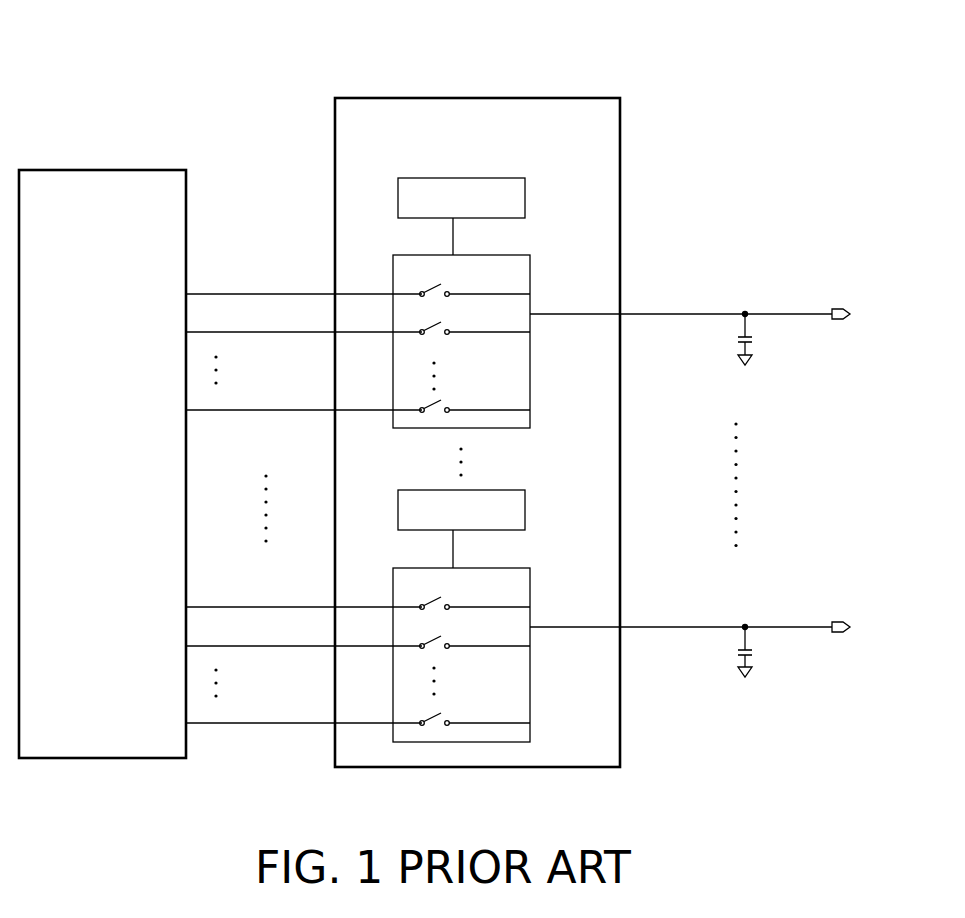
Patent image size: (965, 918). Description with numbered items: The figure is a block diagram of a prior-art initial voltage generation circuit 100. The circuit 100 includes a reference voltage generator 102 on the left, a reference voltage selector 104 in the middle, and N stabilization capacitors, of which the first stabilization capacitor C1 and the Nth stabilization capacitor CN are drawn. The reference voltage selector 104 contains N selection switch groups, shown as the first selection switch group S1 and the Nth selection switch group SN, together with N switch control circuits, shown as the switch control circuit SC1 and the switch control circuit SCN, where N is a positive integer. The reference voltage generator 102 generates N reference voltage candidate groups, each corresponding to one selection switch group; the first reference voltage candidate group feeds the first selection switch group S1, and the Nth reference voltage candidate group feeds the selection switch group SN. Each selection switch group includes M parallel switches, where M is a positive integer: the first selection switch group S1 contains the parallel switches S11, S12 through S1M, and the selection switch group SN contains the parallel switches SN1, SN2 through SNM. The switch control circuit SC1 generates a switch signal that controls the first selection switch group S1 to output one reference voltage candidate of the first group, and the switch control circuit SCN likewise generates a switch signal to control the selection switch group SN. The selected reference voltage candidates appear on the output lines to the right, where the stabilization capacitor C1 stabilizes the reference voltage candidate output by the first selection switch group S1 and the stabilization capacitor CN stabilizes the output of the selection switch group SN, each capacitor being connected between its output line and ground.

The initial voltage generation circuit 100 is at (797, 110).
The reference voltage generator 102 is at (92, 170).
The reference voltage selector 104 is at (470, 98).
The switch control circuit SC1 is at (525, 195).
The switch control circuit SCN is at (525, 507).
The first selection switch group S1 is at (530, 361).
The selection switch group SN is at (530, 689).
The parallel switch S11 is at (443, 285).
The parallel switch S12 is at (443, 323).
The parallel switch S1M is at (443, 401).
The parallel switch SN1 is at (443, 598).
The parallel switch SN2 is at (443, 637).
The parallel switch SNM is at (443, 714).
The stabilization capacitor C1 is at (761, 339).
The stabilization capacitor CN is at (762, 651).